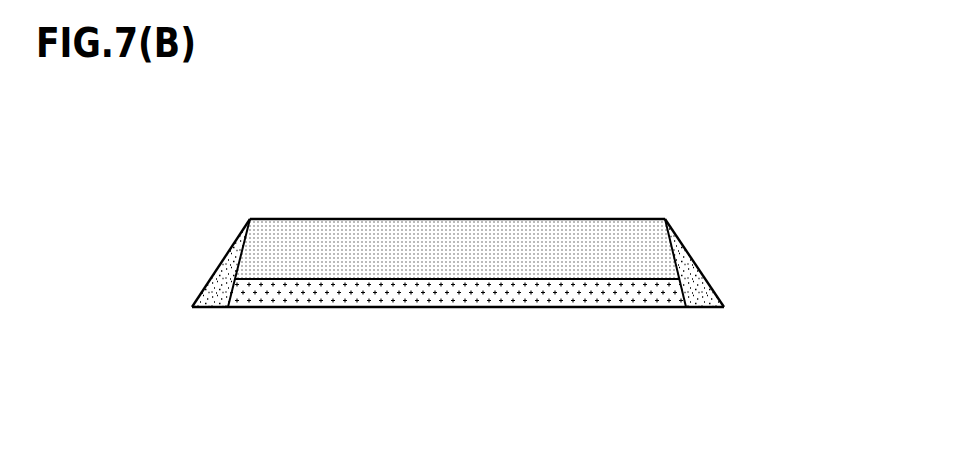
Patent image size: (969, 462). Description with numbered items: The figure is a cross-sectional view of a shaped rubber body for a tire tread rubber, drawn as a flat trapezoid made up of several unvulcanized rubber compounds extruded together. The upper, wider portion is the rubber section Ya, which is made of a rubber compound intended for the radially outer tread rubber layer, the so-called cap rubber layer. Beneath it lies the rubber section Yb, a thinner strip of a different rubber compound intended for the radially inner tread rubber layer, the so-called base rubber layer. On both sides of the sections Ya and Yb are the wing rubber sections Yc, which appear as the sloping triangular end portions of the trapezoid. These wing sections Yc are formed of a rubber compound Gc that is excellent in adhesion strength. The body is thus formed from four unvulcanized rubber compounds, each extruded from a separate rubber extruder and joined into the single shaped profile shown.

The rubber compound Gc is at (221, 263).
The rubber section Ya is at (457, 248).
The rubber section Yb is at (455, 290).
The rubber section Yc is at (210, 284).